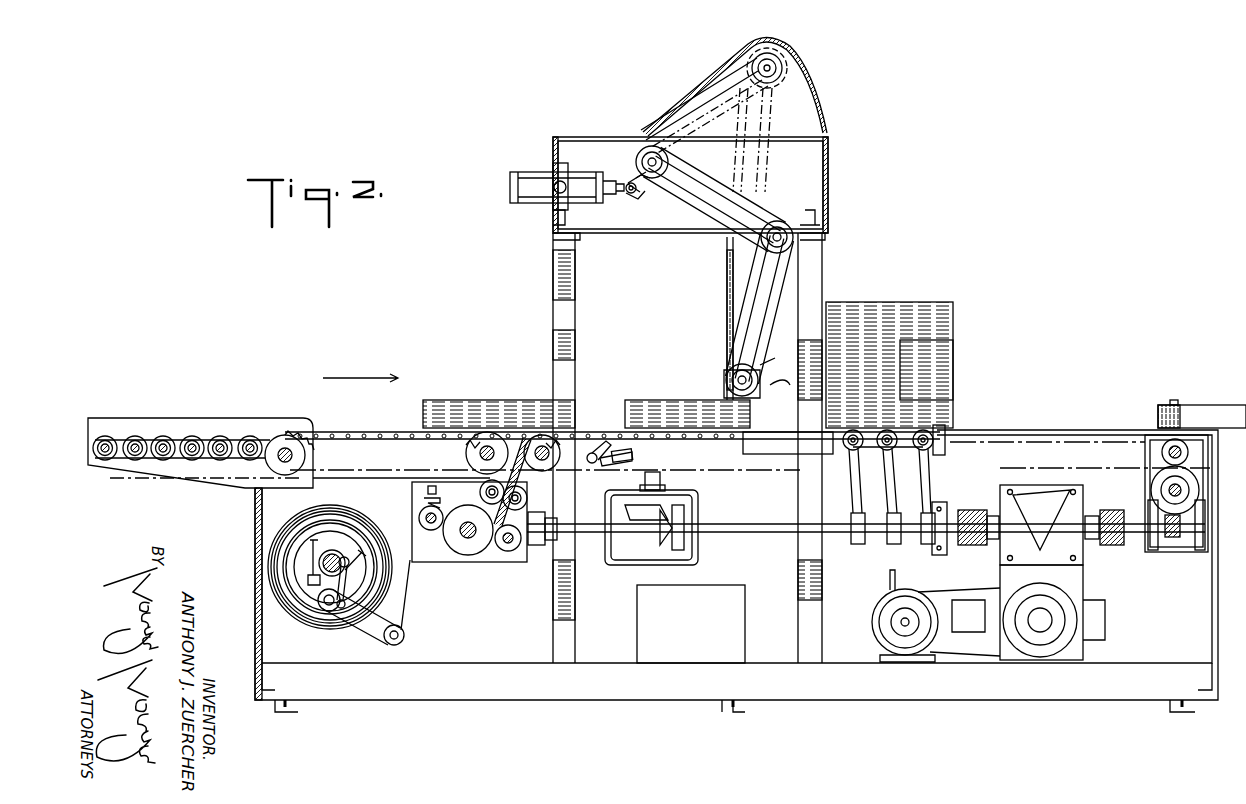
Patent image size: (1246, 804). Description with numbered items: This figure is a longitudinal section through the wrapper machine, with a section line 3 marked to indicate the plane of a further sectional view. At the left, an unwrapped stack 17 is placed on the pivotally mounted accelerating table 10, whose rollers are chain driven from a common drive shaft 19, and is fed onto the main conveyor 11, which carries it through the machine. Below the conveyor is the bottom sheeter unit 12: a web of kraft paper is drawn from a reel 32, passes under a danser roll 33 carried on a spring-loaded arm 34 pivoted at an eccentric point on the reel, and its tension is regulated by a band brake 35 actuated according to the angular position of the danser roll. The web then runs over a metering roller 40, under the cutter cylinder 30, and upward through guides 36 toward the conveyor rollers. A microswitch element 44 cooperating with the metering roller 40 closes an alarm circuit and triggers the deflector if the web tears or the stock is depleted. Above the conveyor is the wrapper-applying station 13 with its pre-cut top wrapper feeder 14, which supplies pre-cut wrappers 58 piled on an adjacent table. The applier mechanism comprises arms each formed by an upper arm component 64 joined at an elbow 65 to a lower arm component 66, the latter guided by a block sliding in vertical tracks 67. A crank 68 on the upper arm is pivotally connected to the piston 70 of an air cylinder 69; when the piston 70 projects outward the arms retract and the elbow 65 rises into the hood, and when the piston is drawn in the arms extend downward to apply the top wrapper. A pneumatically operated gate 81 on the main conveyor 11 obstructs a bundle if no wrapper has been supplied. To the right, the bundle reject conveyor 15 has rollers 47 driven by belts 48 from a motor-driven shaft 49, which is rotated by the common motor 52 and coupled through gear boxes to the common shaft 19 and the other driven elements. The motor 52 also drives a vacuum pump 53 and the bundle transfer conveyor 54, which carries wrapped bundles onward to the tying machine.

The section line 3- 3 is at (683, 65).
The accelerating table 10 is at (222, 412).
The main conveyor 11 is at (385, 414).
The bottom sheeter unit 12 is at (258, 633).
The wrapper-applying station 13 is at (595, 296).
The pre-cut top wrapper feeder 14 is at (974, 337).
The bundle reject conveyor 15 is at (938, 432).
The stack 17 is at (456, 410).
The common drive shaft 19 is at (268, 487).
The cutter cylinder 30 is at (468, 555).
The reel 32 is at (320, 622).
The danser roll 33 is at (404, 640).
The arm 34 is at (365, 625).
The band brake 35 is at (342, 550).
The guides 36 is at (524, 512).
The metering roller 40 is at (432, 532).
The microswitch element 44 is at (422, 500).
The rollers 47 is at (850, 452).
The belts 48 is at (890, 452).
The motor-driven shaft 49 is at (856, 538).
The common motor 52 is at (1035, 515).
The vacuum pump 53 is at (915, 600).
The bundle transfer conveyor 54 is at (1202, 400).
The pre-cut wrappers 58 is at (953, 368).
The upper arm component 64 is at (758, 212).
The elbow 65 is at (790, 228).
The lower arm component 66 is at (768, 305).
The vertical tracks 67 is at (727, 293).
The crank 68 is at (636, 193).
The air cylinder 69 is at (546, 202).
The piston 70 is at (631, 180).
The pneumatically operated gate 81 is at (597, 440).